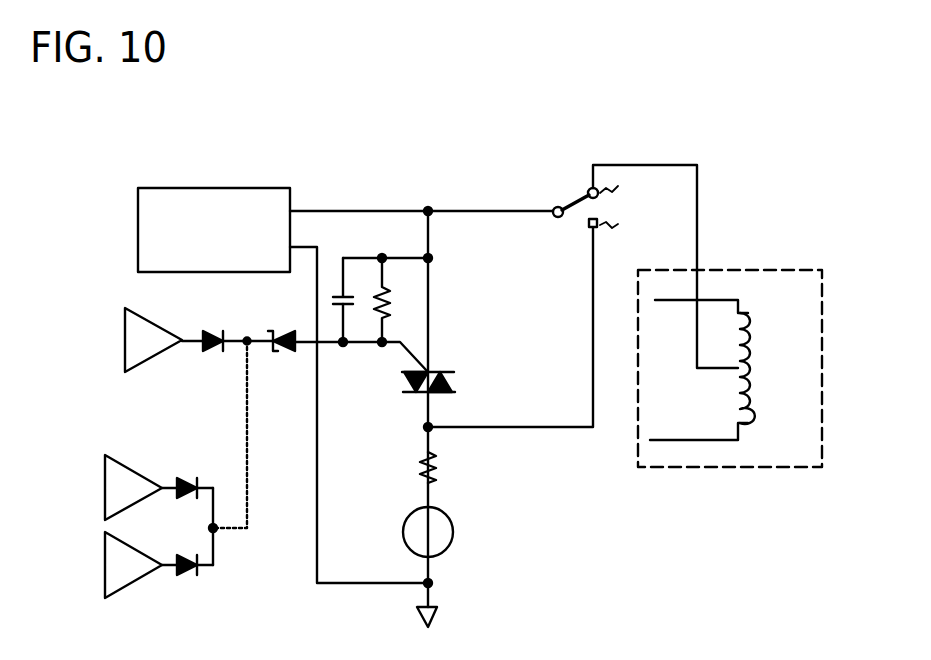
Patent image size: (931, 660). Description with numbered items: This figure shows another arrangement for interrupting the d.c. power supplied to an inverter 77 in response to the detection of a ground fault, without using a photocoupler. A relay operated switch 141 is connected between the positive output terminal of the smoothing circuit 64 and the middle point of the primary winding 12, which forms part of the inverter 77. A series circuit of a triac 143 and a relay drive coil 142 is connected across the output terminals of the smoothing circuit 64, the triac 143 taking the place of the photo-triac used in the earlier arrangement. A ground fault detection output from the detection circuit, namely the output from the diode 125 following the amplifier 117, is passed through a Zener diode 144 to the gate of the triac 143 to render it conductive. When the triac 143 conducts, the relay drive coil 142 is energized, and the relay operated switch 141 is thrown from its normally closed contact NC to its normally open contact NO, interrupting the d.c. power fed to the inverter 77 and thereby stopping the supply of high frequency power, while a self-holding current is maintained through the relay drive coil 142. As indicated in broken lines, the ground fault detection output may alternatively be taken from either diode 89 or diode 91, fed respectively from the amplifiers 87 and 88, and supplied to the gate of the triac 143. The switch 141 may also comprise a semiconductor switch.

The smoothing circuit 64 is at (214, 204).
The amplifier 117 is at (173, 329).
The diode 125 is at (216, 366).
The Zener diode 144 is at (278, 366).
The triac 143 is at (466, 363).
The relay operated switch 141 is at (626, 260).
The relay drive coil 142 is at (470, 531).
The primary winding 12 is at (730, 360).
The inverter 77 is at (748, 395).
The amplifier 87 is at (141, 473).
The diode 89 is at (198, 465).
The amplifier 88 is at (141, 581).
The diode 91 is at (199, 591).